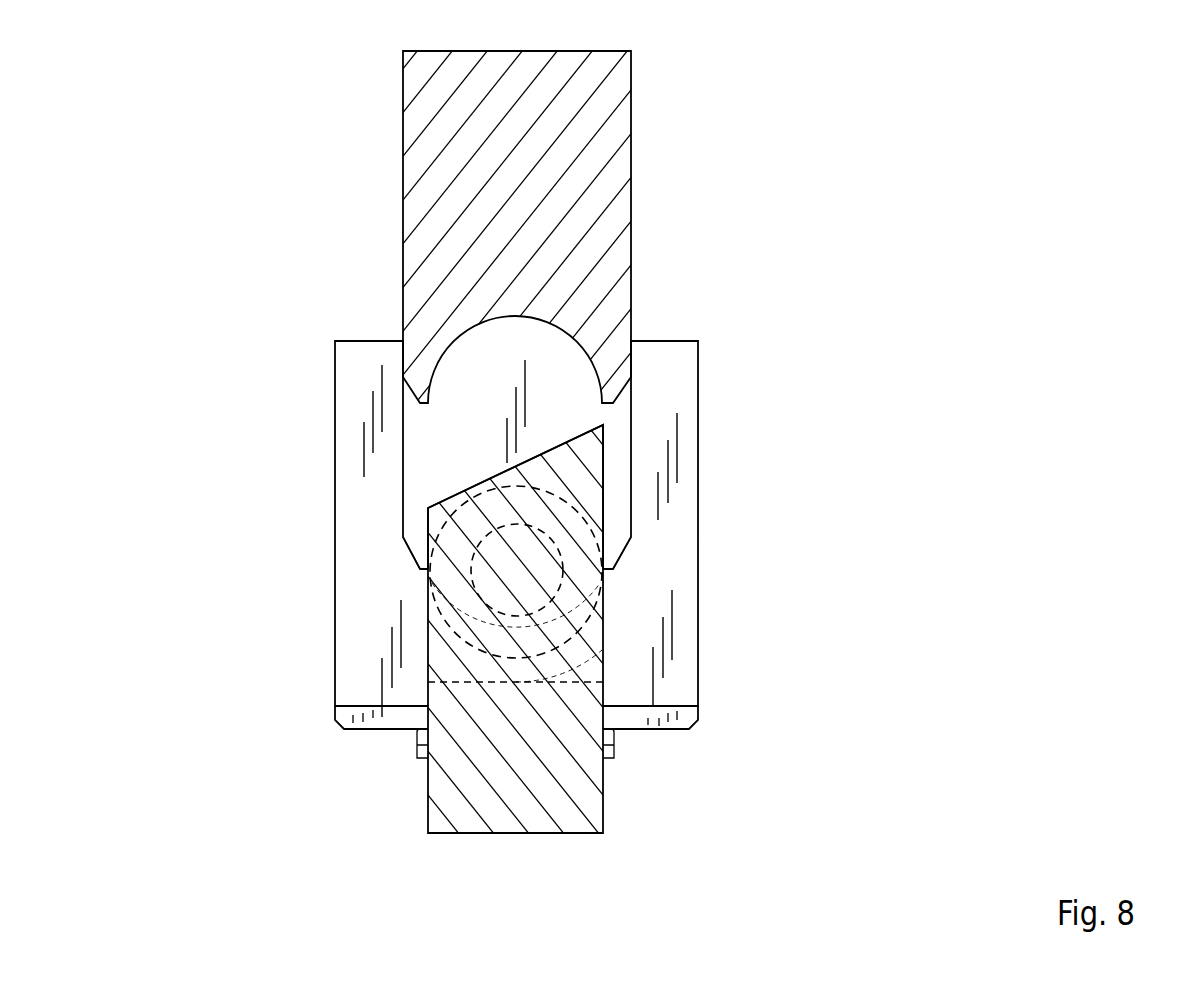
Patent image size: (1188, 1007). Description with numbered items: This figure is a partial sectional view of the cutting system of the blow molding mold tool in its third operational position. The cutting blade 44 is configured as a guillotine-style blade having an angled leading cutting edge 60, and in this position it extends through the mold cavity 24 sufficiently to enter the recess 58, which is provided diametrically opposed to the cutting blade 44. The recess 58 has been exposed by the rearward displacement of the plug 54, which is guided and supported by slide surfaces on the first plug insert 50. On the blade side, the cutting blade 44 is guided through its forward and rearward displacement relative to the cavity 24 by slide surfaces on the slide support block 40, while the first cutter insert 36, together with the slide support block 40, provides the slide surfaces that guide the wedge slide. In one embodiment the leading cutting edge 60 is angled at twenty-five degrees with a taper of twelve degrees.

The mold cavity 24 is at (532, 580).
The first cutter insert 36 is at (670, 670).
The slide support block 40 is at (647, 722).
The cutting blade 44 is at (542, 818).
The first plug insert 50 is at (677, 498).
The plug 54 is at (603, 278).
The recess 58 is at (613, 427).
The angled leading cutting edge 60 is at (440, 490).